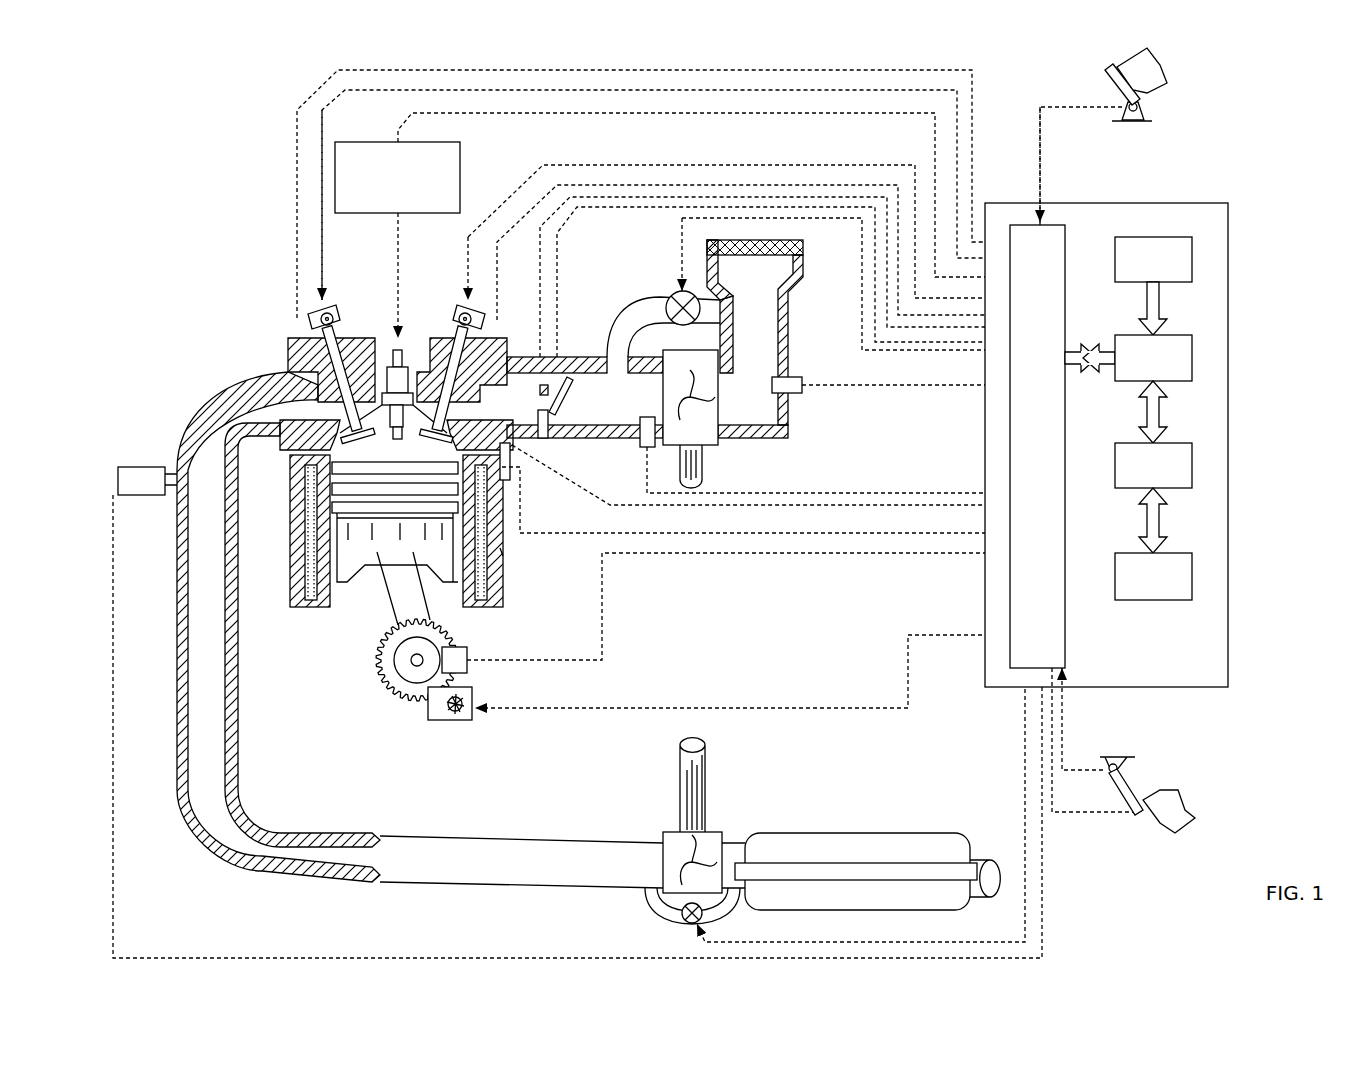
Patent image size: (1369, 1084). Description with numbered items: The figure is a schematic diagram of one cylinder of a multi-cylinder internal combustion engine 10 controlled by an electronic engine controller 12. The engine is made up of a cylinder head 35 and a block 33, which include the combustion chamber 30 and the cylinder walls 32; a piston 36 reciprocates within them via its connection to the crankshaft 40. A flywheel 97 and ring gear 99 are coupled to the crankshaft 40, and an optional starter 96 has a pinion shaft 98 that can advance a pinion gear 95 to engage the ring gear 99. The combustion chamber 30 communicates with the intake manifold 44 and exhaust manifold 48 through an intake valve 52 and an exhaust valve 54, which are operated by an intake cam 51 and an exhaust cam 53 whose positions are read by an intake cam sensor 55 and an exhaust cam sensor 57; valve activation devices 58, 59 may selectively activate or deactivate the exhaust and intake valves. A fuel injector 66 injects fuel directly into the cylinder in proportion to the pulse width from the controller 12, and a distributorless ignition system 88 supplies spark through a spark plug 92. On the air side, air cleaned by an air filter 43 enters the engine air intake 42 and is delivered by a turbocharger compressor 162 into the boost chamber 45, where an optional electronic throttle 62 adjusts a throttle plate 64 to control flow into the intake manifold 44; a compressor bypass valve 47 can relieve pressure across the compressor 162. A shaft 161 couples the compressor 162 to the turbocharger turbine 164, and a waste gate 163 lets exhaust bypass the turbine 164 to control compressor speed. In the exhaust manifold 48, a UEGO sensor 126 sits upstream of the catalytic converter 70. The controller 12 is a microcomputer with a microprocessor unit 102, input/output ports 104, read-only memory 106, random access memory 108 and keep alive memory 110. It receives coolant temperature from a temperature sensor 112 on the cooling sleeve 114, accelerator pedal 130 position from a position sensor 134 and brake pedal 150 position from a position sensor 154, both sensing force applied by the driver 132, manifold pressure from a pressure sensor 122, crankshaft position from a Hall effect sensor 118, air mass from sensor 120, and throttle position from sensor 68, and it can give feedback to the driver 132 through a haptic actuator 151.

The internal combustion engine 10 is at (222, 290).
The electronic engine controller 12 is at (1228, 205).
The combustion chamber 30 is at (393, 450).
The cylinder walls 32 is at (337, 593).
The block 33 is at (288, 490).
The cylinder head 35 is at (289, 340).
The piston 36 is at (377, 552).
The crankshaft 40 is at (410, 678).
The engine air intake 42 is at (800, 325).
The air filter 43 is at (773, 258).
The intake manifold 44 is at (585, 397).
The boost chamber 45 is at (700, 413).
The compressor bypass valve 47 is at (680, 292).
The exhaust manifold 48 is at (420, 630).
The intake cam 51 is at (450, 330).
The intake valve 52 is at (432, 402).
The exhaust cam 53 is at (313, 317).
The exhaust valve 54 is at (350, 422).
The intake cam sensor 55 is at (493, 327).
The exhaust cam sensor 57 is at (315, 323).
The valve activation device 58 is at (340, 318).
The valve activation device 59 is at (462, 335).
The electronic throttle 62 is at (567, 382).
The throttle plate 64 is at (560, 402).
The fuel injector 66 is at (510, 465).
The throttle position sensor 68 is at (540, 430).
The catalytic converter 70 is at (790, 833).
The distributorless ignition system 88 is at (350, 142).
The spark plug 92 is at (401, 350).
The pinion gear 95 is at (460, 718).
The starter 96 is at (470, 720).
The flywheel 97 is at (393, 657).
The pinion shaft 98 is at (455, 713).
The ring gear 99 is at (420, 693).
The microprocessor unit 102 is at (1192, 358).
The input/output ports 104 is at (1068, 232).
The read-only memory 106 is at (1192, 258).
The random access memory 108 is at (1192, 465).
The keep alive memory 110 is at (1192, 575).
The temperature sensor 112 is at (756, 500).
The cooling sleeve 114 is at (500, 552).
The Hall effect sensor 118 is at (467, 650).
The air mass sensor 120 is at (795, 378).
The pressure sensor 122 is at (648, 447).
The Universal Exhaust Gas Oxygen sensor 126 is at (118, 468).
The accelerator pedal 130 is at (1115, 82).
The driver 132 is at (1168, 70).
The position sensor 134 is at (1150, 108).
The brake pedal 150 is at (1142, 818).
The haptic actuator 151 is at (1135, 798).
The position sensor 154 is at (1107, 762).
The shaft 161 is at (705, 458).
The turbocharger compressor 162 is at (742, 432).
The waste gate 163 is at (685, 920).
The turbocharger turbine 164 is at (668, 832).